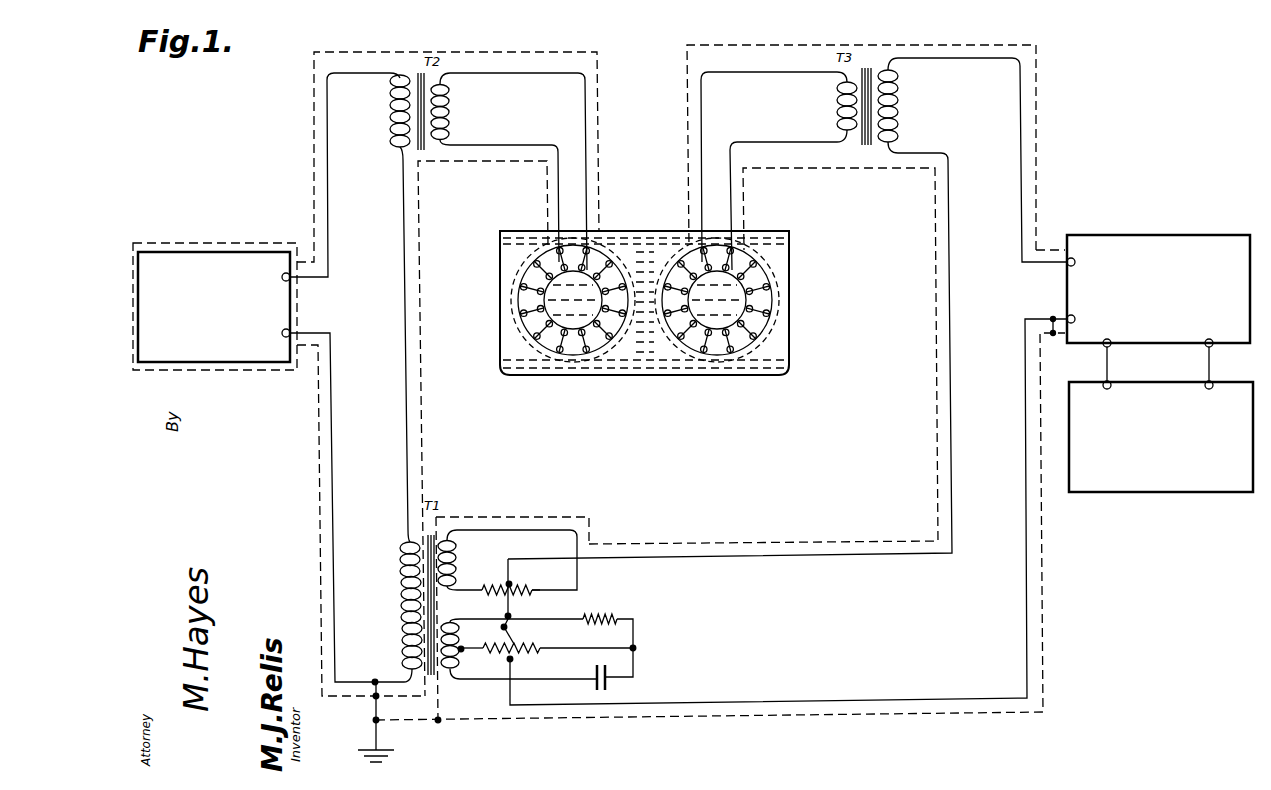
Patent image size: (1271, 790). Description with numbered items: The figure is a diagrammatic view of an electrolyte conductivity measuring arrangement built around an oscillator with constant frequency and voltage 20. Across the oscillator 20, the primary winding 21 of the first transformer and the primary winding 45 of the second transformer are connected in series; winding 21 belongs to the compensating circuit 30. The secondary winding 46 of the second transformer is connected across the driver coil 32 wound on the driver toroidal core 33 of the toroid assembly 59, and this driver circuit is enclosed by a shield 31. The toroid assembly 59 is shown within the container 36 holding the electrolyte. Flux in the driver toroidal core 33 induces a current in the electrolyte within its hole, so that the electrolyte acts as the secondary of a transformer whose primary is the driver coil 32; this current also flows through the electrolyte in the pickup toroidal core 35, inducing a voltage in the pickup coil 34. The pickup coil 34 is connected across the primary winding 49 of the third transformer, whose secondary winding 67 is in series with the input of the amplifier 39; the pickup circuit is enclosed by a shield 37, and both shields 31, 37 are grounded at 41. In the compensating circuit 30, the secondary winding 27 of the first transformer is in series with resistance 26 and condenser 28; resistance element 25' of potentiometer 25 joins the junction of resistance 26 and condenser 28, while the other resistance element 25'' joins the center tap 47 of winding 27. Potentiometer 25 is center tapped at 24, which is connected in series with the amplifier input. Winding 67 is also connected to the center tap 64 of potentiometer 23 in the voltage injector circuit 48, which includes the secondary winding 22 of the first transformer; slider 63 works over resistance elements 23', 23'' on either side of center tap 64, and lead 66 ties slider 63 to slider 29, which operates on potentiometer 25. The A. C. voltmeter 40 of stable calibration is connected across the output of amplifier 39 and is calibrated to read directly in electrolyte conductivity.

The oscillator with constant frequency and voltage 20 is at (217, 252).
The primary winding of transformer T1 21 is at (400, 605).
The secondary winding of transformer T1 22 is at (453, 548).
The potentiometer 23 is at (495, 576).
The resistance element 23' is at (508, 567).
The resistance element 23'' is at (554, 597).
The center tap 24 is at (508, 678).
The potentiometer 25 is at (558, 656).
The resistance element 25' is at (529, 663).
The resistance element 25'' is at (484, 632).
The resistance 26 is at (595, 615).
The secondary winding of transformer T1 27 is at (458, 622).
The condenser 28 is at (595, 682).
The slider 29 is at (506, 627).
The compensating circuit 30 is at (466, 709).
The shield 31 is at (315, 125).
The driver coil 32 is at (512, 314).
The driver toroidal core 33 is at (543, 345).
The pickup coil 34 is at (780, 300).
The pickup toroidal core 35 is at (752, 343).
The container 36 is at (791, 368).
The shield 37 is at (663, 541).
The amplifier 39 is at (1155, 346).
The A. C. voltmeter 40 is at (1160, 494).
The ground 41 is at (394, 750).
The primary winding of transformer T2 45 is at (390, 117).
The secondary winding of transformer T2 46 is at (450, 117).
The center tap 47 is at (462, 651).
The voltage injector circuit 48 is at (493, 530).
The primary winding of transformer T3 49 is at (836, 112).
The toroid assembly 59 is at (655, 366).
The slider 63 is at (506, 604).
The center tap 64 is at (511, 582).
The lead 66 is at (510, 616).
The secondary winding of transformer T3 67 is at (898, 112).